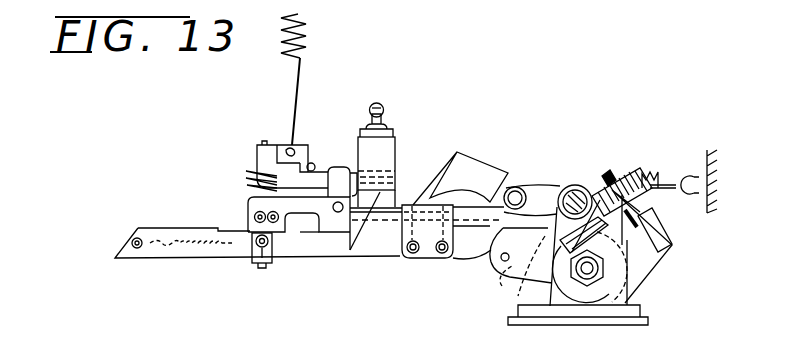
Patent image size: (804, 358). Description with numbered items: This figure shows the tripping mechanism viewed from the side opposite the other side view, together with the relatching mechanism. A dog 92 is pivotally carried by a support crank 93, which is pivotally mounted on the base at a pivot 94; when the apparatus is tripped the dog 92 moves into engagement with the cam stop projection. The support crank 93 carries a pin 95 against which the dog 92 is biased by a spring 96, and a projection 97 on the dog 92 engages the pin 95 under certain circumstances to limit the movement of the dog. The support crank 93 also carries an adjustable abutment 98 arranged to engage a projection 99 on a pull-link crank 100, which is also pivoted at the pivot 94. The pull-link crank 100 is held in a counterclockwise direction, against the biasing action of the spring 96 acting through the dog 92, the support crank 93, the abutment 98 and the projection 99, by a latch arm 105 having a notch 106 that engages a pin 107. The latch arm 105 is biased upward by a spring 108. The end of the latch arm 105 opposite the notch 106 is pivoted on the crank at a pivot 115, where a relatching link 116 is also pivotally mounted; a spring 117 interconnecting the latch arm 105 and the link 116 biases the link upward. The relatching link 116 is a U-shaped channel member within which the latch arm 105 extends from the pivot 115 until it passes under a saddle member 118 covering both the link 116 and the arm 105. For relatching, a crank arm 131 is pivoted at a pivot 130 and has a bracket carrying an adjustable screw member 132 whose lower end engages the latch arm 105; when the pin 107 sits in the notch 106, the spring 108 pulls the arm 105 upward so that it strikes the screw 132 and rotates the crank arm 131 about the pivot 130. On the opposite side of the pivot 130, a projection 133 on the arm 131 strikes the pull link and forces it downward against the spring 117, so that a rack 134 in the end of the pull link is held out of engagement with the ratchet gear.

The dog 92 is at (473, 163).
The support crank 93 is at (505, 282).
The pivot 94 is at (601, 276).
The pin 95 is at (492, 272).
The spring 96 is at (655, 174).
The projection 97 is at (512, 288).
The adjustable abutment 98 is at (655, 214).
The projection 99 is at (652, 232).
The pull-link crank 100 is at (648, 250).
The latch arm 105 is at (290, 168).
The notch 106 is at (295, 176).
The pin 107 is at (313, 165).
The spring 108 is at (303, 40).
The pivot 115 is at (573, 185).
The relatching link 116 is at (288, 250).
The spring 117 is at (243, 182).
The saddle member 118 is at (405, 240).
The pivot 130 is at (338, 213).
The crank arm 131 is at (330, 248).
The adjustable screw member 132 is at (384, 109).
The projection 133 is at (252, 216).
The rack 134 is at (176, 262).